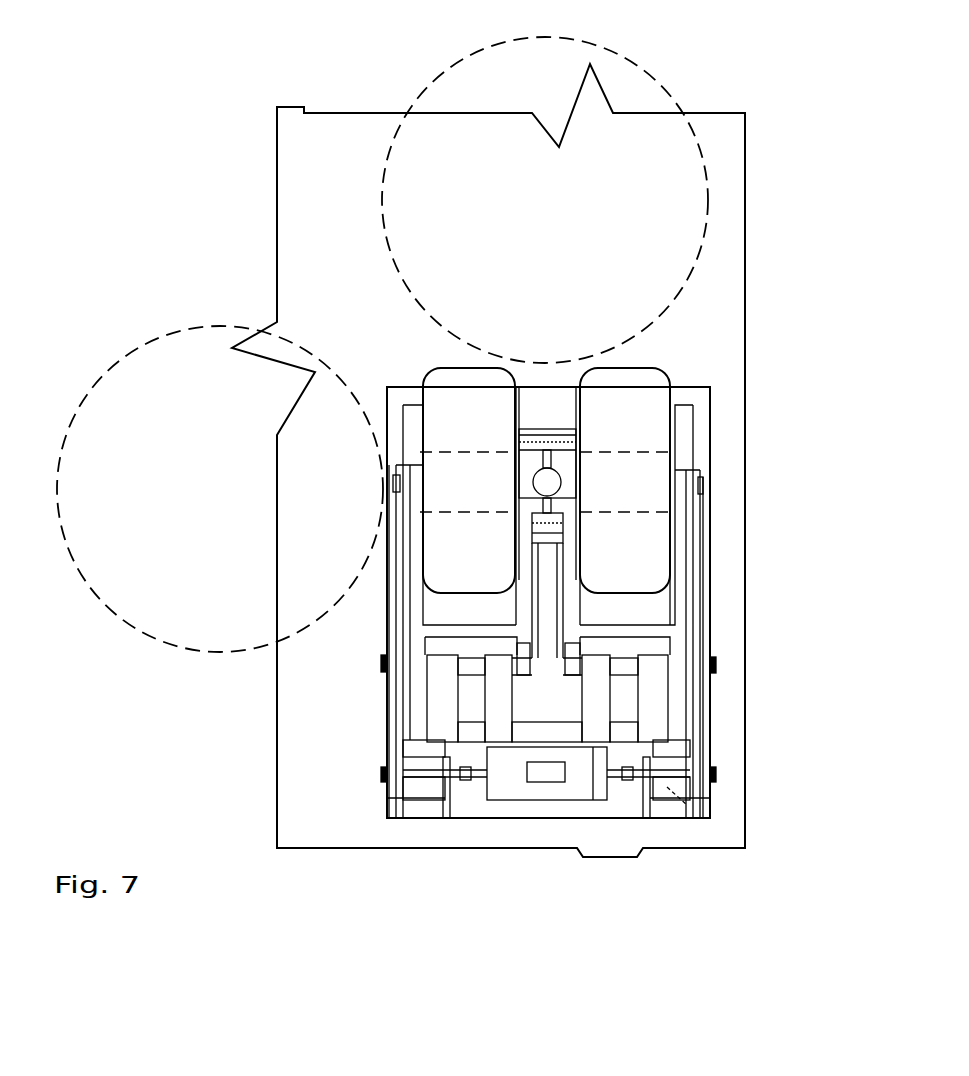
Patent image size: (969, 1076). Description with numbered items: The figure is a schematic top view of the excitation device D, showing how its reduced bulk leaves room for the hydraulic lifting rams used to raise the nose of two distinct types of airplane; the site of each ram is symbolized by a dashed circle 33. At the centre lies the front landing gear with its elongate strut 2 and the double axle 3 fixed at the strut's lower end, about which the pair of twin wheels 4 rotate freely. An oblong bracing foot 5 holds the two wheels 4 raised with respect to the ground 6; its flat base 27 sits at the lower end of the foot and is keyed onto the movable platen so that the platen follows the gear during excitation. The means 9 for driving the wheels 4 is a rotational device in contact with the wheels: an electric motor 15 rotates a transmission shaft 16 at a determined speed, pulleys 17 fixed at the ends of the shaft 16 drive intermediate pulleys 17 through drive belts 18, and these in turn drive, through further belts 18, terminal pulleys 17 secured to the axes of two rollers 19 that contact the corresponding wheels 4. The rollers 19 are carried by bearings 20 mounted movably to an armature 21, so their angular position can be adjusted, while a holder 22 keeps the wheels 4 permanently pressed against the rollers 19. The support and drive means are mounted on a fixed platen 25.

The strut 2 is at (507, 584).
The double axle 3 is at (700, 423).
The twin wheels 4 is at (460, 391).
The bracing foot 5 is at (537, 445).
The ground 6 is at (720, 153).
The means for driving the wheels 9 is at (710, 693).
The electric motor 15 is at (505, 790).
The transmission shaft 16 is at (418, 790).
The pulleys 17 is at (398, 490).
The drive belts 18 is at (393, 713).
The rollers 19 is at (400, 466).
The bearings 20 is at (415, 570).
The armature 21 is at (435, 712).
The holder 22 is at (695, 521).
The fixed platen 25 is at (652, 419).
The flat base 27 is at (553, 462).
The dashed circle 33 is at (660, 80).
The excitation device D is at (612, 850).